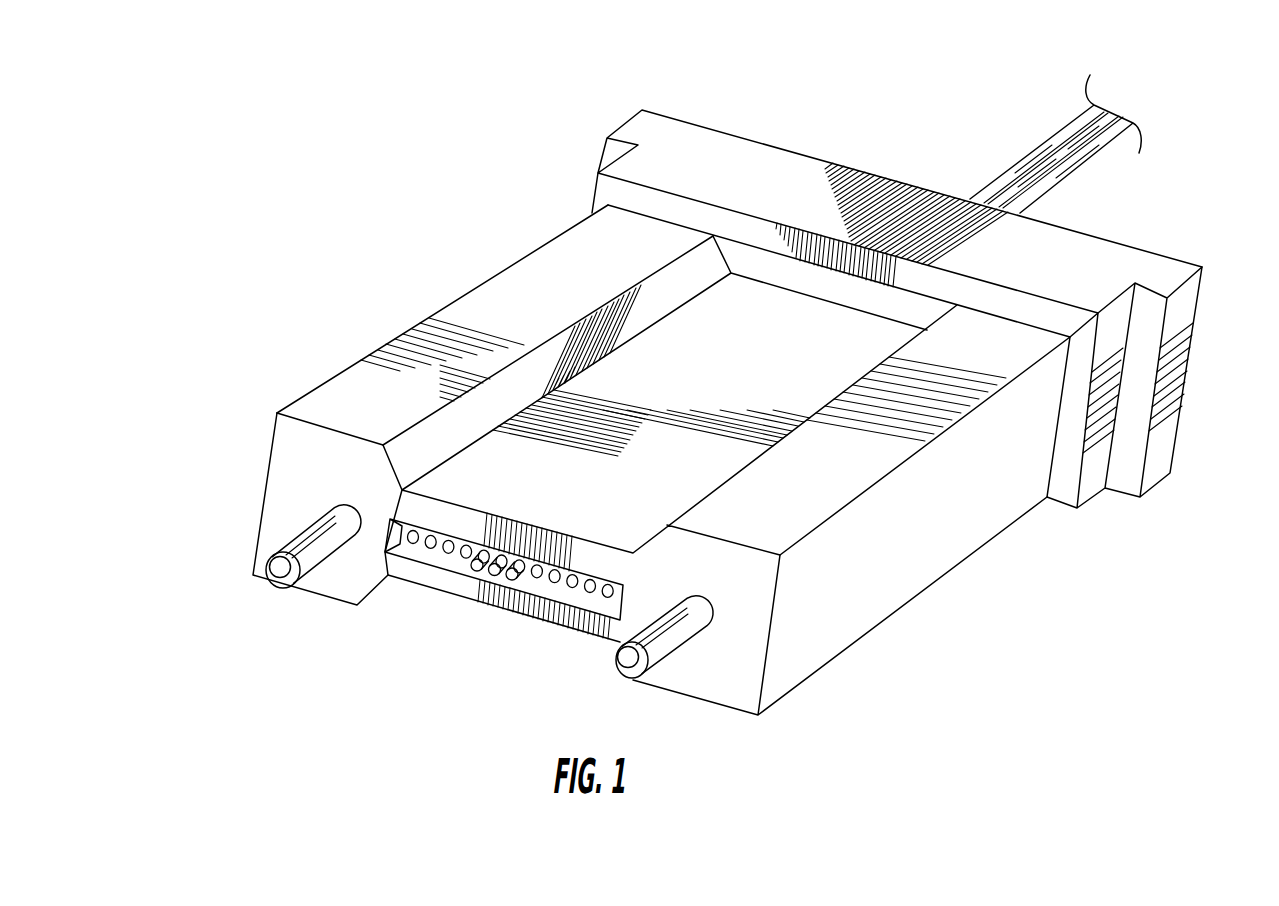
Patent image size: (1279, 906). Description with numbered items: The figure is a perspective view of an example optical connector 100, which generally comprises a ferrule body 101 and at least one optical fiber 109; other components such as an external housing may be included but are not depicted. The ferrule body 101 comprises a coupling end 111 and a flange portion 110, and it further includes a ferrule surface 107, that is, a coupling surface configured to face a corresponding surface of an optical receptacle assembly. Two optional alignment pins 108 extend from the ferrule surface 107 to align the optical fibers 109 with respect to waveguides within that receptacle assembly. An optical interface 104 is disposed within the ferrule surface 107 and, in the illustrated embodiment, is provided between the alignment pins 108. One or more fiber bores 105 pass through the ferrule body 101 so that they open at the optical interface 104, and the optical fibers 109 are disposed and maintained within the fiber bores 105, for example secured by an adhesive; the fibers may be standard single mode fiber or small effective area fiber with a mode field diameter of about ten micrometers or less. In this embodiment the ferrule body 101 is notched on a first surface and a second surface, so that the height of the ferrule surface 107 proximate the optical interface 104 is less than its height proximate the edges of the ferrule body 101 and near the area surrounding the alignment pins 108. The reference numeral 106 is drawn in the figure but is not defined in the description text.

The optical connector 100 is at (413, 141).
The ferrule body 101 is at (278, 292).
The optical interface 104 is at (562, 578).
The fiber bores 105 is at (558, 576).
The connector recess 106 is at (390, 520).
The ferrule surface 107 is at (298, 462).
The alignment pins 108 is at (308, 553).
The optical fiber 109 is at (1040, 143).
The flange portion 110 is at (1123, 225).
The coupling end 111 is at (423, 310).